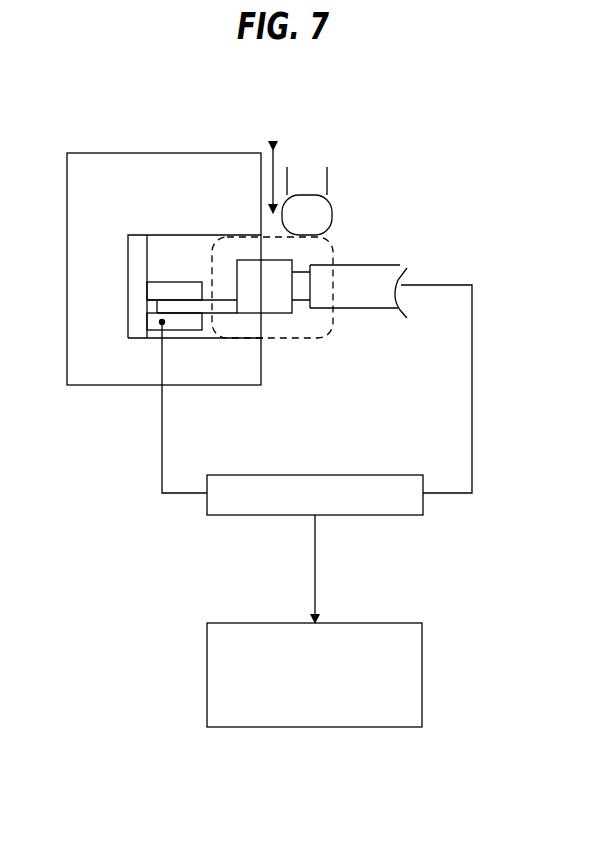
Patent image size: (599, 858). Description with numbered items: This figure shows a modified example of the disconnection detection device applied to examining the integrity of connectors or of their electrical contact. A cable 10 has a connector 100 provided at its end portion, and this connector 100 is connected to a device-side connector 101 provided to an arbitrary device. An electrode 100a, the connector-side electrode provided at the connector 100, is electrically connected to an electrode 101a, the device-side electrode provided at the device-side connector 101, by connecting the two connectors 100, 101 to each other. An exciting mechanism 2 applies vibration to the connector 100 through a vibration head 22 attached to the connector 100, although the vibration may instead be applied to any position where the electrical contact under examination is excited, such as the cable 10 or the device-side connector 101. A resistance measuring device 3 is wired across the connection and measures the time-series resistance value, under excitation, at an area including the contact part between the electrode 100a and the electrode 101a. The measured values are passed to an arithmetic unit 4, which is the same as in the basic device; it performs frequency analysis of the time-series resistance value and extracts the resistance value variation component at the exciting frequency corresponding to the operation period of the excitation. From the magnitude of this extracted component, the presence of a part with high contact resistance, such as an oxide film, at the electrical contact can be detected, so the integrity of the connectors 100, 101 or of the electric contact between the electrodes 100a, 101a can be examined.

The exciting mechanism 2 is at (337, 168).
The vibration head 22 is at (320, 215).
The cable 10 is at (403, 273).
The connector 100 is at (330, 333).
The electrode 100a is at (216, 312).
The device-side connector 101 is at (167, 153).
The electrode 101a is at (182, 327).
The resistance measuring device 3 is at (423, 515).
The arithmetic unit 4 is at (423, 678).